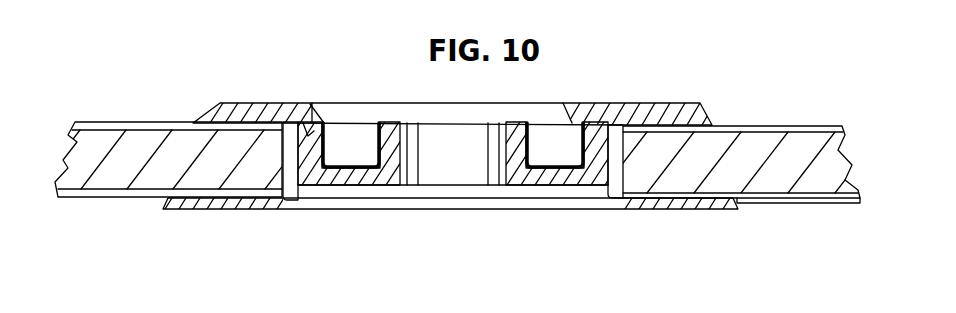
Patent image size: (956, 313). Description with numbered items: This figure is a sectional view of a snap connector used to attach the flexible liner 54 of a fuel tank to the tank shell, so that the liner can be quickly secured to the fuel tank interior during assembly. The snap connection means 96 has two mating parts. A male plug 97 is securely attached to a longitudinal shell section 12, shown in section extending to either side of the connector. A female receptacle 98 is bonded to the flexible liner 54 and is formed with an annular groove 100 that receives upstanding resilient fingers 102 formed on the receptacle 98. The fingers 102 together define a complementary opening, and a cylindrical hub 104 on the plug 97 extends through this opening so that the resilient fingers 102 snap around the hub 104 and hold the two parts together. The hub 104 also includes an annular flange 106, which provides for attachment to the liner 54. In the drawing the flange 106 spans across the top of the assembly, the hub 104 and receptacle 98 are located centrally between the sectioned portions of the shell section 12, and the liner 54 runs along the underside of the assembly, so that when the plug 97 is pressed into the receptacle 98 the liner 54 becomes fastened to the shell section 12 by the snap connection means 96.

The longitudinal shell section 12 is at (777, 182).
The flexible liner 54 is at (815, 203).
The snap connection means 96 is at (272, 226).
The male plug 97 is at (456, 113).
The female receptacle 98 is at (558, 195).
The annular groove 100 is at (325, 123).
The upstanding resilient fingers 102 is at (302, 170).
The cylindrical hub 104 is at (525, 180).
The annular flange 106 is at (680, 115).